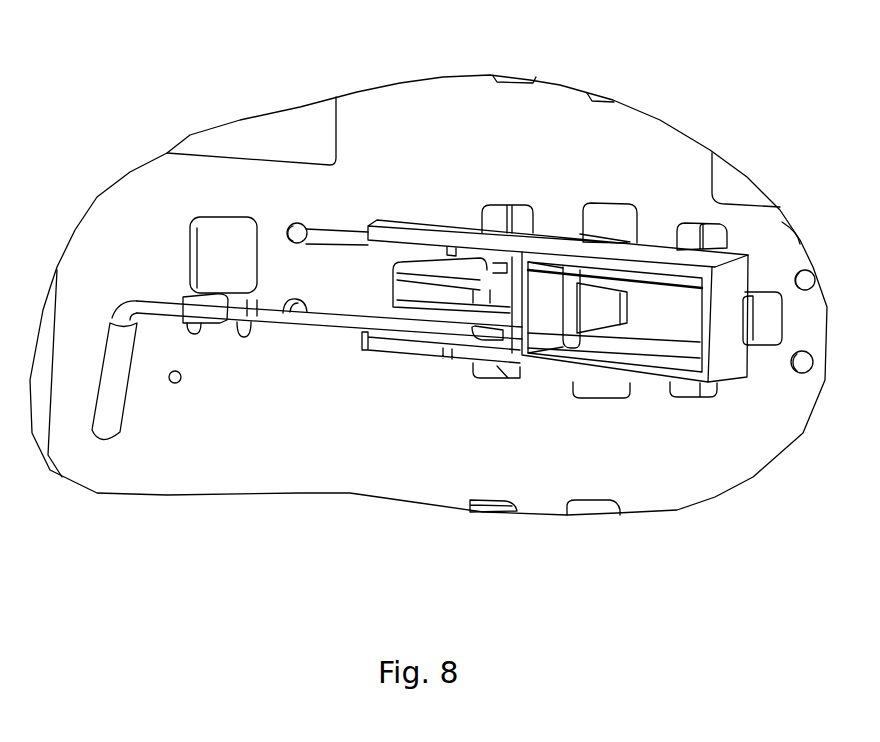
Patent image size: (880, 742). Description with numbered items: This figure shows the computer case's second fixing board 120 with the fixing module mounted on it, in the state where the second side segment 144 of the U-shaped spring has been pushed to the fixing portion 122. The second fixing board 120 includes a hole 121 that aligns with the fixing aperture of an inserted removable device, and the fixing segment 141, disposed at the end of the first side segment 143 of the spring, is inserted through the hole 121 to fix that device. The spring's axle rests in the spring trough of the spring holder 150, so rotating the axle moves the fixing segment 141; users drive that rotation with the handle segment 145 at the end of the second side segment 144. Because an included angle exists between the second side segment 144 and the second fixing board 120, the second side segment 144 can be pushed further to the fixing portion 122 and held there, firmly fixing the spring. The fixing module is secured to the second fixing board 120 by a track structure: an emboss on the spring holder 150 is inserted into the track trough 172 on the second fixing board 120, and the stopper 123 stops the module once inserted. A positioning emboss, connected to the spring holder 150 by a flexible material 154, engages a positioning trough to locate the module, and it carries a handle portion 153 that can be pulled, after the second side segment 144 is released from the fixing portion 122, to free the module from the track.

The second fixing board 120 is at (688, 516).
The hole 121 is at (302, 222).
The fixing portion 122 is at (220, 328).
The stopper 123 is at (758, 343).
The fixing segment 141 is at (288, 222).
The first side segment 143 is at (340, 227).
The second side segment 144 is at (312, 328).
The handle segment 145 is at (125, 402).
The spring holder 150 is at (650, 380).
The handle portion 153 is at (578, 345).
The flexible material 154 is at (667, 280).
The track trough 172 is at (730, 243).